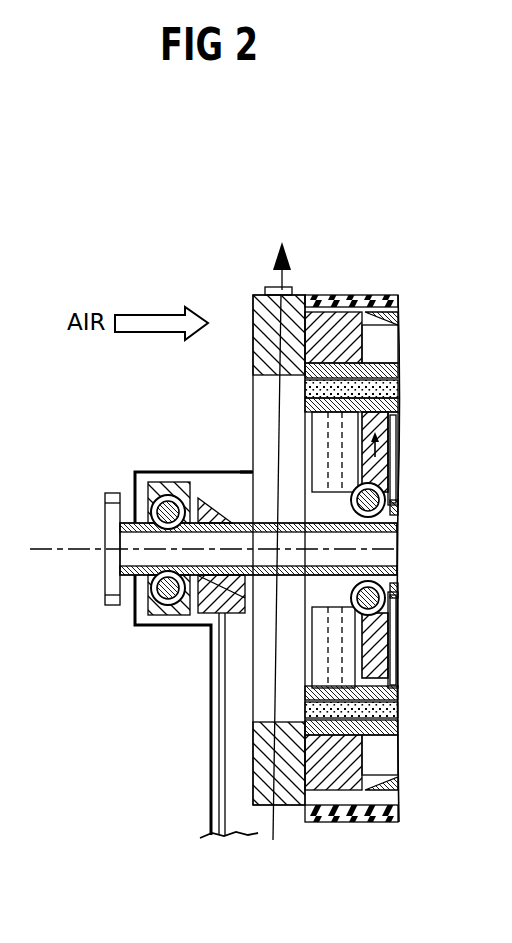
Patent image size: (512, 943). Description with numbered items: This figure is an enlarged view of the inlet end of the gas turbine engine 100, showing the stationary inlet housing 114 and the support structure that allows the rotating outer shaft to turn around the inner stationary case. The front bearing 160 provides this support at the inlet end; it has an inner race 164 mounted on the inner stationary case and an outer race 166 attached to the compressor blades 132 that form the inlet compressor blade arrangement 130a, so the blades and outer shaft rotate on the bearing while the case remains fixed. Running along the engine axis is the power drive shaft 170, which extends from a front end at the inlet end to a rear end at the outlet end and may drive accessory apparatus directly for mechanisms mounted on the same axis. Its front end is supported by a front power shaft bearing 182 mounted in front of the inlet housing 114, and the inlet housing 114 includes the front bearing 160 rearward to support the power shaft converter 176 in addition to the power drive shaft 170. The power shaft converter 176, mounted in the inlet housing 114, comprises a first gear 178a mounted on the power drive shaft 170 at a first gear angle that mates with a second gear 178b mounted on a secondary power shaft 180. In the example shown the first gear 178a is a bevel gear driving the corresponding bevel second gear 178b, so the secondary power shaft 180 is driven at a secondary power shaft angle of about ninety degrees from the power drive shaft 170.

The gas turbine engine 100 is at (225, 183).
The stationary inlet housing 114 is at (242, 857).
The inlet compressor blade arrangement 130a is at (395, 665).
The compressor blades 132 is at (378, 452).
The front bearing 160 is at (405, 488).
The inner race 164 is at (403, 505).
The outer race 166 is at (392, 628).
The power drive shaft 170 is at (365, 533).
The power shaft converter 176 is at (202, 477).
The first gear 178a is at (212, 500).
The second gear 178b is at (212, 615).
The secondary power shaft 180 is at (223, 767).
The front power shaft bearing 182 is at (152, 458).